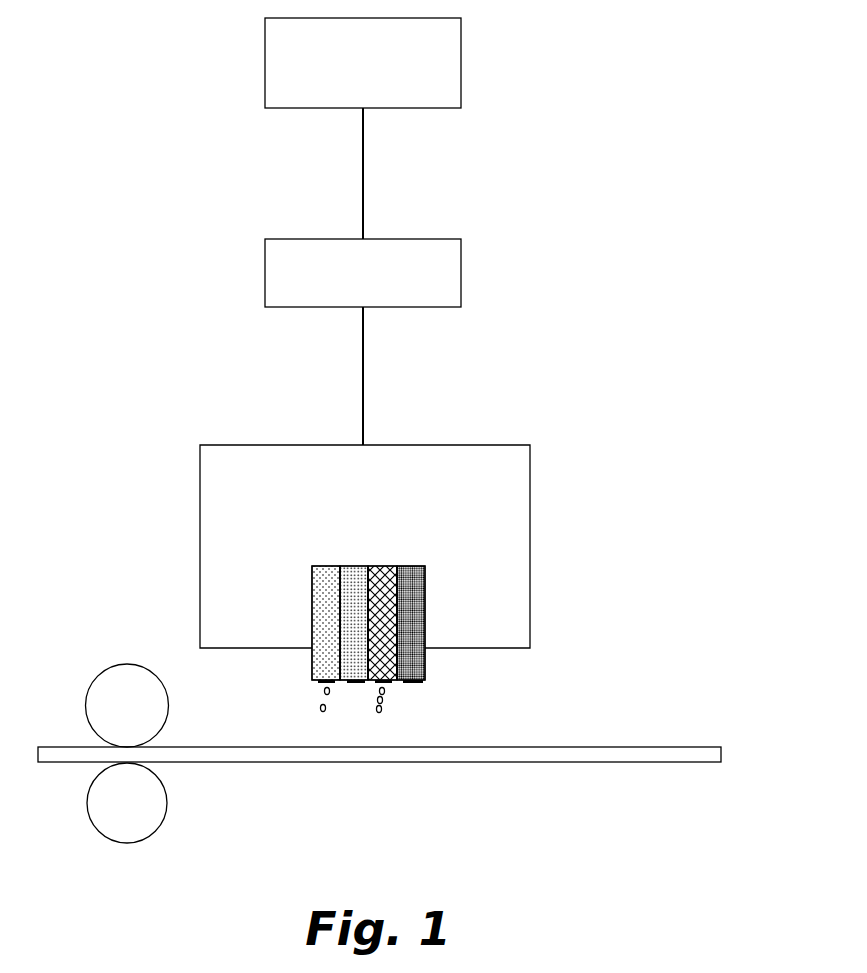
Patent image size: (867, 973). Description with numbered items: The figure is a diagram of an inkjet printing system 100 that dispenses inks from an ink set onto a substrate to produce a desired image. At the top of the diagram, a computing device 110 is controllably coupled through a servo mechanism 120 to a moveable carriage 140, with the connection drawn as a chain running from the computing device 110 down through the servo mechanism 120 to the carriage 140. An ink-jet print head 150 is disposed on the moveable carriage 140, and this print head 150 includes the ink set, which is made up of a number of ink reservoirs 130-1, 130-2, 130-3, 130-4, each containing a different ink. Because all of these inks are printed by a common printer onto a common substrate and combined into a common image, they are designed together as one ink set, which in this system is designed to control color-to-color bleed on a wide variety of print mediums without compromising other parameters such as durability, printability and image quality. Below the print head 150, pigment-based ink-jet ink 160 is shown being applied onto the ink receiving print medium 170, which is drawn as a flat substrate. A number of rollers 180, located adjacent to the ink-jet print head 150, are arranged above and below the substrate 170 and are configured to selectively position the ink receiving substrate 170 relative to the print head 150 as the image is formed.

The inkjet printing system 100 is at (163, 110).
The computing device 110 is at (363, 63).
The servo mechanism 120 is at (363, 273).
The ink reservoir 130-1 is at (325, 582).
The ink reservoir 130-2 is at (350, 568).
The ink reservoir 130-3 is at (385, 570).
The ink reservoir 130-4 is at (425, 576).
The moveable carriage 140 is at (365, 546).
The ink-jet print head 150 is at (425, 623).
The pigment-based ink-jet ink 160 is at (391, 702).
The print medium 170 is at (617, 752).
The rollers 180 is at (167, 813).